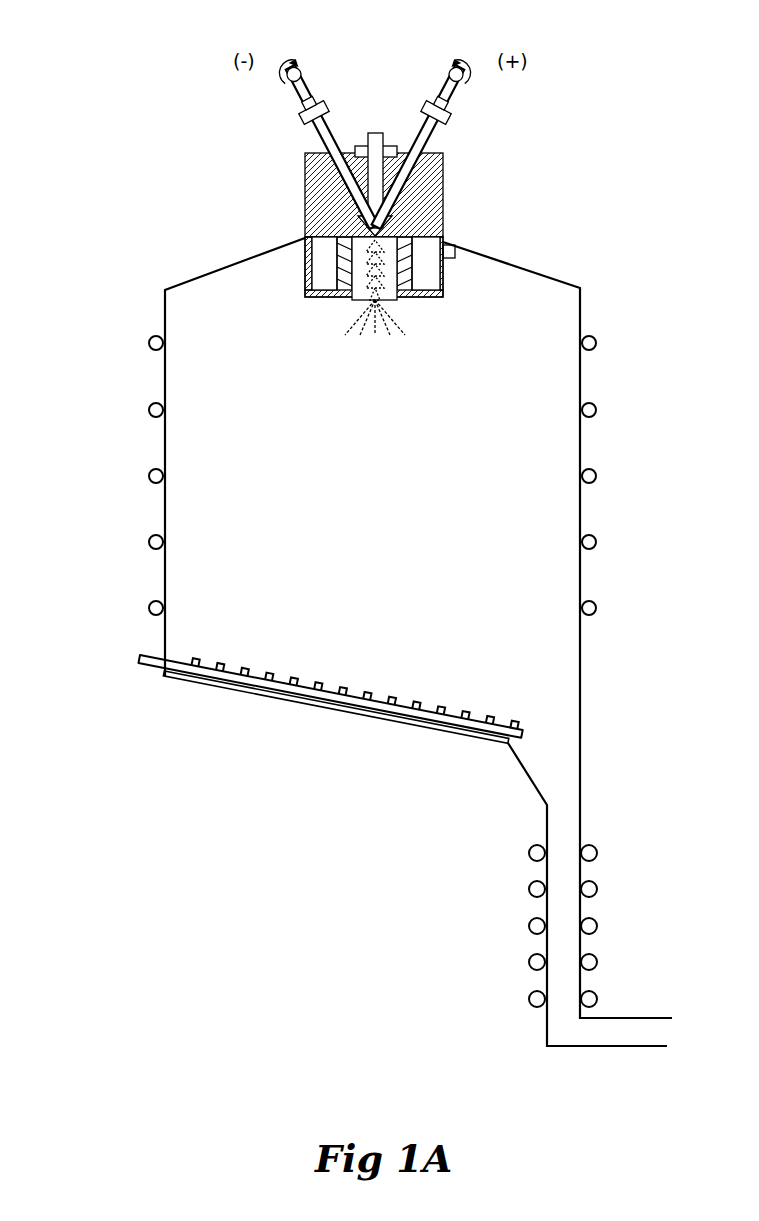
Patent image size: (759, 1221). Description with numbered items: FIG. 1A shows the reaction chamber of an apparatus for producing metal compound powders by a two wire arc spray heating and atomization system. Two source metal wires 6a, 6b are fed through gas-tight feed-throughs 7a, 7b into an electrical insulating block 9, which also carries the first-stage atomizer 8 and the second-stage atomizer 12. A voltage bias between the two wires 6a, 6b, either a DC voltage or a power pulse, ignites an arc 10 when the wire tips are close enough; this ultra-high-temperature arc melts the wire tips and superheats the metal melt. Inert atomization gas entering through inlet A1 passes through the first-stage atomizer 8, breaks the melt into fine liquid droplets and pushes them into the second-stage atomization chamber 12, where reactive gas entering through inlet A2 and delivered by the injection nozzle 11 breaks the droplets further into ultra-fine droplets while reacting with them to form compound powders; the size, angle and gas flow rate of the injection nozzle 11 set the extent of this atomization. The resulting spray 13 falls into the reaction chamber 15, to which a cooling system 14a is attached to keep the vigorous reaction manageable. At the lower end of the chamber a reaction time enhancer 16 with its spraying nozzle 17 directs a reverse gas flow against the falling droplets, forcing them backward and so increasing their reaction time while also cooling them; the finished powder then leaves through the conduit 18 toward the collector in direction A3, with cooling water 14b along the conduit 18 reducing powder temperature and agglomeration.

The source metal wire 6a is at (295, 85).
The source metal wire 6b is at (463, 88).
The gas-tight feed-through 7a is at (300, 112).
The gas-tight feed-through 7b is at (453, 118).
The first-stage atomizer 8 is at (362, 150).
The electrical insulating block 9 is at (305, 167).
The arc 10 is at (363, 218).
The injection nozzle 11 is at (352, 257).
The second-stage atomizer 12 is at (360, 277).
The plasma jet 13 is at (400, 335).
The cooling system 14a is at (148, 410).
The cooling water 14b is at (597, 890).
The reactor chamber 15 is at (490, 455).
The reaction time enhancer 16 is at (200, 670).
The spraying nozzle 17 is at (283, 698).
The conduit 18 is at (560, 879).
The first-stage atomization gas inlet A1 is at (375, 130).
The second-stage atomization gas inlet A2 is at (458, 252).
The discharge direction A3 is at (130, 656).